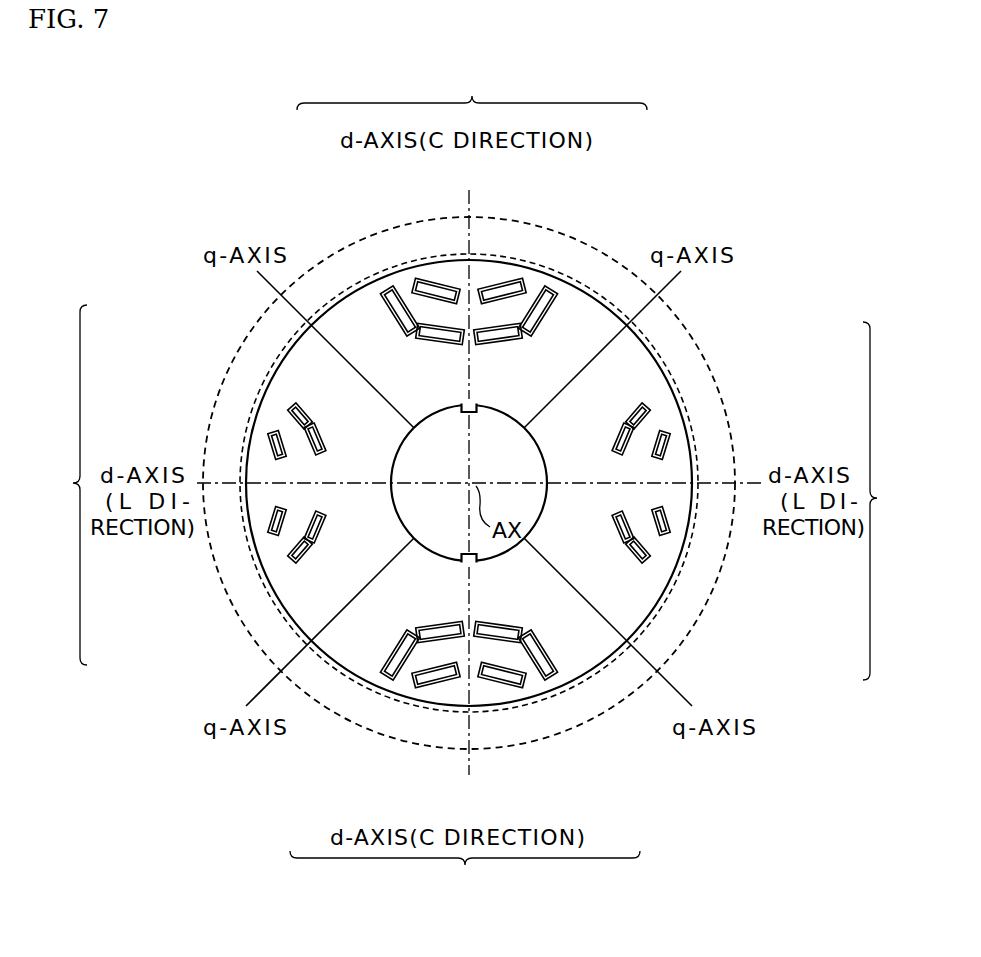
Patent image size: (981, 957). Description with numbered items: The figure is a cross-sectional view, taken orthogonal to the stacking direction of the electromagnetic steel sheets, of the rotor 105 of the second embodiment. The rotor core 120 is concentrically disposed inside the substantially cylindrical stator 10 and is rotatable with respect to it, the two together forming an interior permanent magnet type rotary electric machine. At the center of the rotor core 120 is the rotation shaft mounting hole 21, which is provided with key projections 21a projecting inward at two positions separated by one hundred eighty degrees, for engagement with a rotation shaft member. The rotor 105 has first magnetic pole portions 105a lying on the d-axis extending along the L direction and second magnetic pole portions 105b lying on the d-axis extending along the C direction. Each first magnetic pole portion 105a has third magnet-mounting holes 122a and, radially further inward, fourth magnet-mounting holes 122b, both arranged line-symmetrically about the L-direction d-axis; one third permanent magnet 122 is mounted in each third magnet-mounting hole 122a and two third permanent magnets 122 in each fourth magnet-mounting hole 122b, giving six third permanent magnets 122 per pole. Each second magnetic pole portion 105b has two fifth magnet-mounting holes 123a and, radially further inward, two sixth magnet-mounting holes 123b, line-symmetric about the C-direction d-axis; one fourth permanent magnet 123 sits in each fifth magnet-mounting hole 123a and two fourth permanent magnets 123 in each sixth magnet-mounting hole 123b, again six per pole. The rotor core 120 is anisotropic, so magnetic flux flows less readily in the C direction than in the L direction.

The stator 10 is at (689, 326).
The rotor 105 is at (845, 792).
The first magnetic pole portion 105a is at (479, 492).
The second magnetic pole portion 105b is at (468, 479).
The rotor core 120 is at (660, 607).
The rotation shaft mounting hole 21 is at (545, 505).
The key projection 21a is at (476, 410).
The third permanent magnet 122 is at (445, 680).
The third magnet-mounting hole 122a is at (428, 704).
The fourth magnet-mounting hole 122b is at (388, 648).
The fourth permanent magnet 123 is at (445, 286).
The fifth magnet-mounting hole 123a is at (428, 262).
The sixth magnet-mounting hole 123b is at (388, 318).